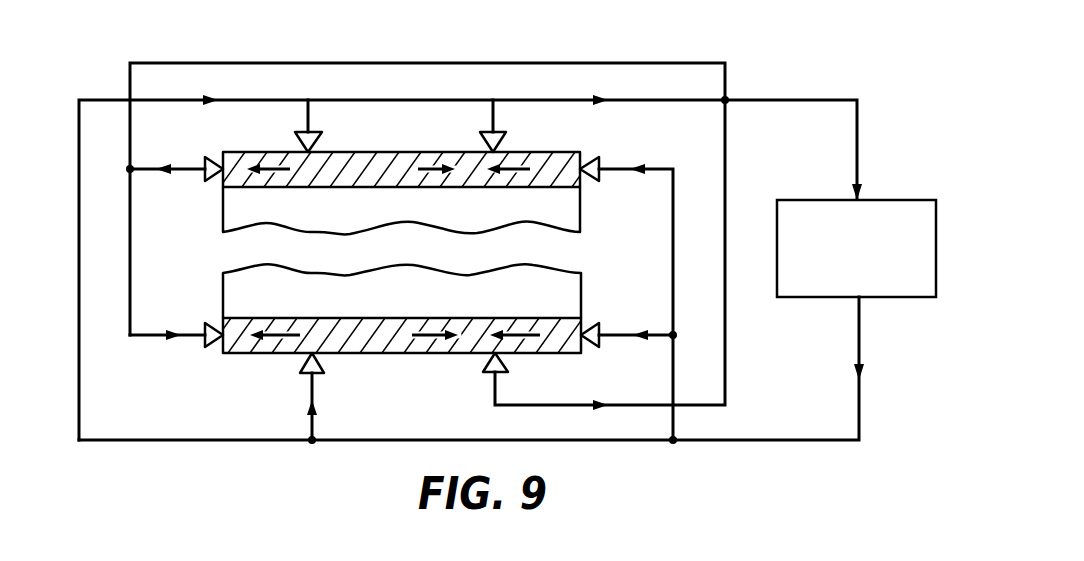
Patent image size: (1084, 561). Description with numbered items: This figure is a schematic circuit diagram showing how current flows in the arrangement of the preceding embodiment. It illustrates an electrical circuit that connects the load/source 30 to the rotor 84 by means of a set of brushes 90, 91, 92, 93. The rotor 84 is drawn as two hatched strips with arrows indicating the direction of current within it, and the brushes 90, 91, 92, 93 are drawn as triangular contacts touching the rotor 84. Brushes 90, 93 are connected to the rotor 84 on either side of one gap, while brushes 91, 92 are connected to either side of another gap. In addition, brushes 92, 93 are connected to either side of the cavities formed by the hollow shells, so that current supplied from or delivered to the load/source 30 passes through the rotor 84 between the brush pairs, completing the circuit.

The load/source 30 is at (882, 199).
The rotor 84 is at (400, 152).
The brush 90 is at (586, 160).
The brush 91 is at (212, 154).
The brush 92 is at (320, 133).
The brush 93 is at (464, 392).